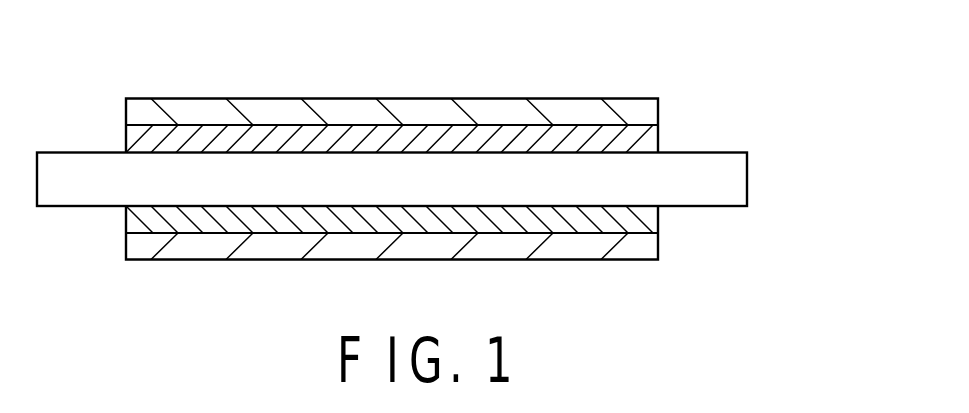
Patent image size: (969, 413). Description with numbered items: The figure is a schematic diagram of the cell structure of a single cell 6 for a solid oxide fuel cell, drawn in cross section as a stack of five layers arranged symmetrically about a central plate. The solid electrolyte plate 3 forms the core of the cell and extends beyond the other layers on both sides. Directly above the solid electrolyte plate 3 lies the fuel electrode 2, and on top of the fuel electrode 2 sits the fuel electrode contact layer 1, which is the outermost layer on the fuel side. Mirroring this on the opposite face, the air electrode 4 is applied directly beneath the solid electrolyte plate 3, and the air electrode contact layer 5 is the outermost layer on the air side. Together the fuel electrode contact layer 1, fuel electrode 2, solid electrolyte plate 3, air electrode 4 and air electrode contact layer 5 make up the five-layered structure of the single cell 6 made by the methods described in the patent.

The fuel electrode contact layer 1 is at (658, 113).
The fuel electrode 2 is at (658, 140).
The solid electrolyte plate 3 is at (747, 182).
The air electrode 4 is at (658, 220).
The air electrode contact layer 5 is at (658, 245).
The single cell 6 is at (117, 30).